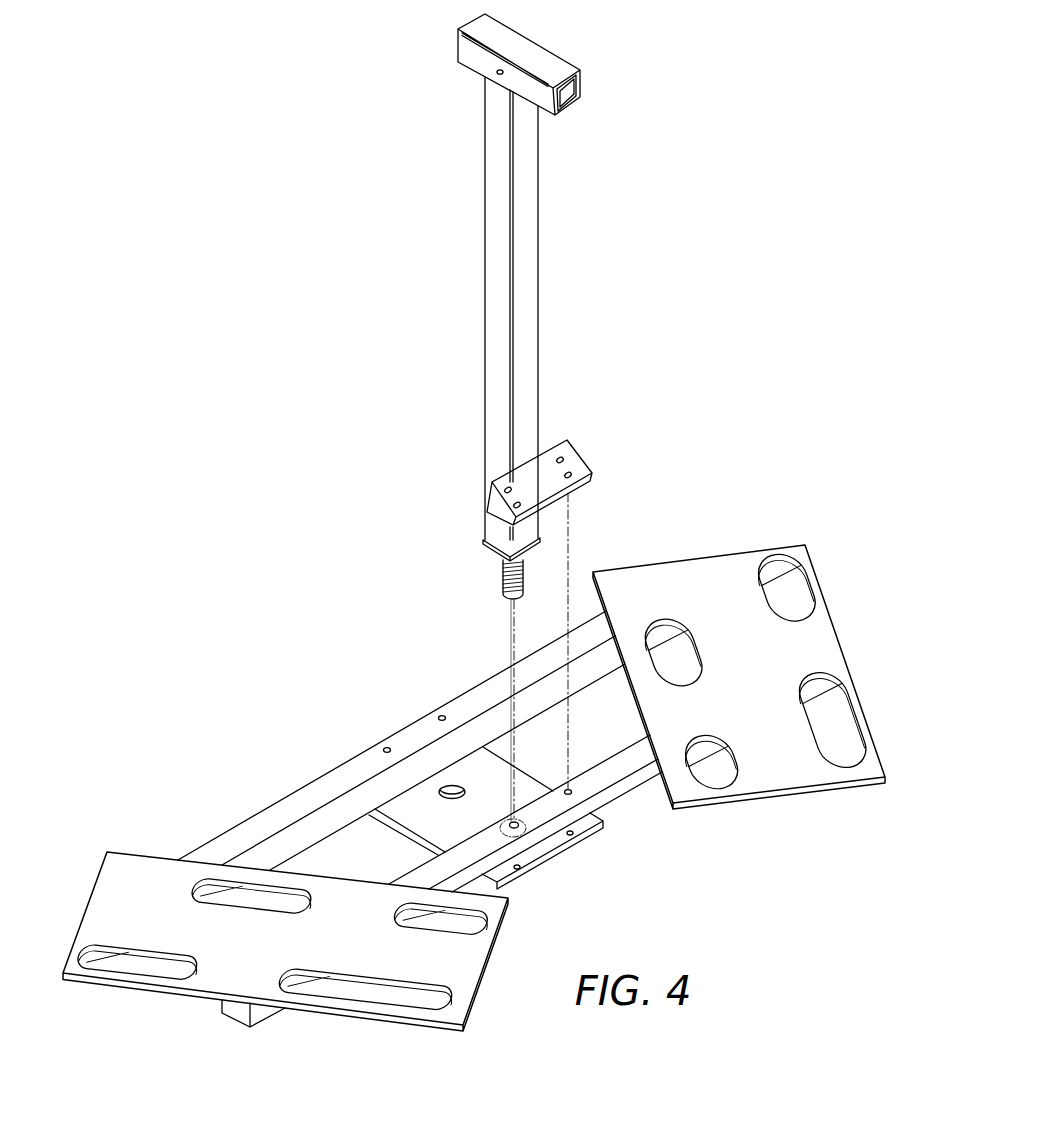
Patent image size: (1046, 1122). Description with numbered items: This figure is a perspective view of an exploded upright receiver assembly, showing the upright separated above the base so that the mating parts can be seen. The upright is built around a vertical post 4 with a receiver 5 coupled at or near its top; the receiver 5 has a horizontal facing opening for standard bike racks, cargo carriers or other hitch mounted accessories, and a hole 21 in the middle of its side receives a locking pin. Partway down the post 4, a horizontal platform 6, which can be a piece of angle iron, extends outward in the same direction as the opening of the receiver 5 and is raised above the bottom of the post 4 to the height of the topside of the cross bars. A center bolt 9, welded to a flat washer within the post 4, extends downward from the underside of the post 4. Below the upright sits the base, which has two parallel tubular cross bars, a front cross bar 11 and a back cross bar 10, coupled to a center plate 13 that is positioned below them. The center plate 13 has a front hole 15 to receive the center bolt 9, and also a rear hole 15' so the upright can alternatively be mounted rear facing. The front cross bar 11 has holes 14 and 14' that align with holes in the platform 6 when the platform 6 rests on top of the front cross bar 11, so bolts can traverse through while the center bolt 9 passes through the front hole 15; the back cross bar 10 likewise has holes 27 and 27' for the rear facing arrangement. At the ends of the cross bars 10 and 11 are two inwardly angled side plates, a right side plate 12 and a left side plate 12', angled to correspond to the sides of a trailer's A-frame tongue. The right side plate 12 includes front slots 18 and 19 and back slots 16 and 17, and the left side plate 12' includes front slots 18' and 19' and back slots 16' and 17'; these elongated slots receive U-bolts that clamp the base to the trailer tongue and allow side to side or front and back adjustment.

The vertical post 4 is at (520, 297).
The receiver 5 is at (553, 52).
The horizontal platform 6 is at (587, 467).
The center bolt 9 is at (501, 597).
The back cross bar 10 is at (308, 802).
The front cross bar 11 is at (598, 782).
The right side plate 12 is at (285, 941).
The left side plate 12' is at (739, 677).
The center plate 13 is at (395, 827).
The hole 14 is at (543, 865).
The hole 14' is at (604, 838).
The front hole 15 is at (488, 844).
The rear hole 15' is at (440, 811).
The back slot 16 is at (127, 994).
The back slot 17 is at (253, 917).
The front slot 18 is at (366, 1020).
The front slot 19 is at (471, 932).
The back slot 16' is at (819, 587).
The back slot 17' is at (694, 644).
The front slot 18' is at (860, 720).
The front slot 19' is at (742, 762).
The hole 21 is at (488, 78).
The hole 27 is at (355, 731).
The hole 27' is at (407, 705).